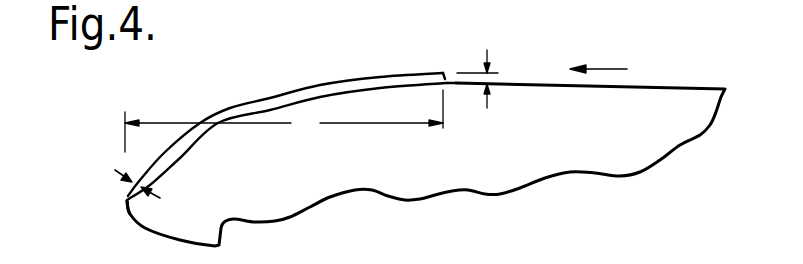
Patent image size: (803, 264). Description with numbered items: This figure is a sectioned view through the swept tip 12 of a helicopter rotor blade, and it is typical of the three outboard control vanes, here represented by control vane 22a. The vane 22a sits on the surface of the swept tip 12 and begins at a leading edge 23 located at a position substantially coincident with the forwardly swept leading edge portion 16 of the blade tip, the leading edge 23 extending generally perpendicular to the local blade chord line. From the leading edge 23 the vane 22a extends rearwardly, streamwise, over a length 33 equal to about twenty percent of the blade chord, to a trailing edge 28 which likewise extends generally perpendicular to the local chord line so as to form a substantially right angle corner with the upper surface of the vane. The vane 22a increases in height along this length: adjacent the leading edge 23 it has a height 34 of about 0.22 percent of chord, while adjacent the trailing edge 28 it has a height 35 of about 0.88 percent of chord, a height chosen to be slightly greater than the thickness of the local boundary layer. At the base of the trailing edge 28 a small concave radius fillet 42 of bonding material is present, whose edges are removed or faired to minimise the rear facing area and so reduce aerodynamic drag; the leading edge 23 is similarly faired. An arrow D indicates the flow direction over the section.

The swept tip 12 is at (472, 178).
The forwardly swept leading edge portion 16 is at (127, 208).
The control vane 22a is at (316, 88).
The leading edge 23 is at (124, 199).
The trailing edge 28 is at (449, 77).
The length 33 is at (284, 121).
The height 34 is at (138, 173).
The height 35 is at (492, 78).
The concave radius fillet 42 is at (457, 82).
The direction of air flow D is at (610, 68).